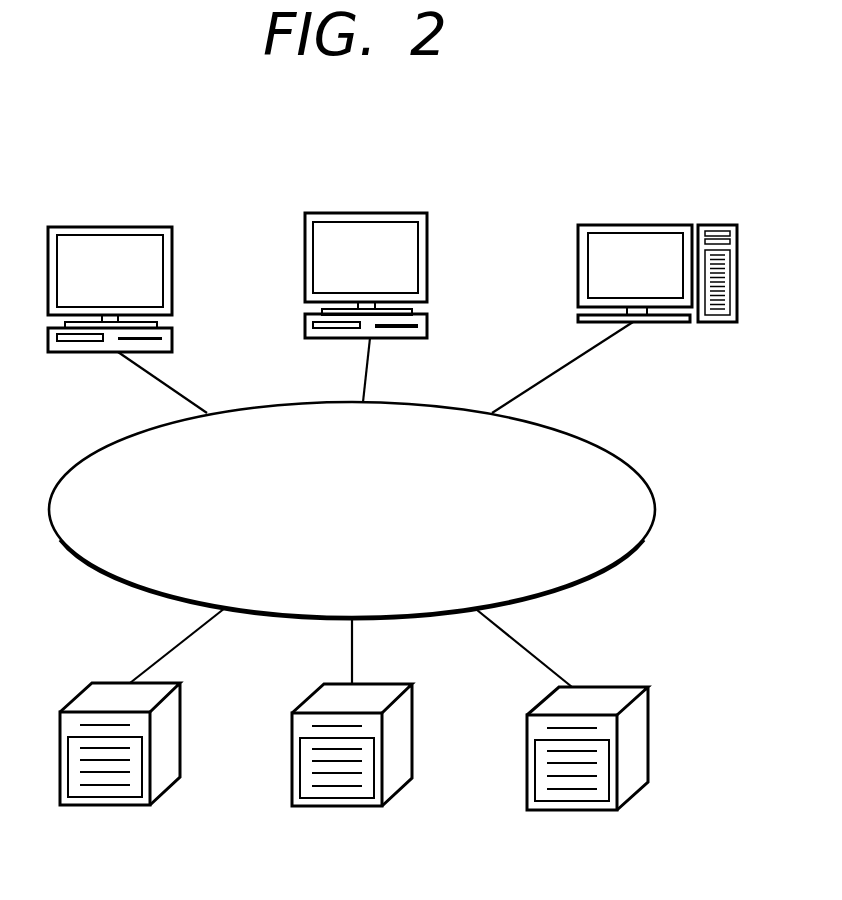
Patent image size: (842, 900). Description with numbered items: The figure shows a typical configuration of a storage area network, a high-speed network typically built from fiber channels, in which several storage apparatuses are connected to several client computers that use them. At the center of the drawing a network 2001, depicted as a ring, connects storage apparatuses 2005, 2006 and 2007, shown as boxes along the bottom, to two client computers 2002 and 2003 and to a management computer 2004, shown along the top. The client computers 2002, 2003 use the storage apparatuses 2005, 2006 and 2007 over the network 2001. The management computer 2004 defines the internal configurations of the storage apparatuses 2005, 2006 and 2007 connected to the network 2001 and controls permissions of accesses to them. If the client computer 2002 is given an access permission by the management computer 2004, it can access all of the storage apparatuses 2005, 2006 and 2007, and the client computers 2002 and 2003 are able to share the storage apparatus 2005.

The network 2001 is at (610, 452).
The client computer 2002 is at (147, 207).
The client computer 2003 is at (400, 195).
The management computer 2004 is at (677, 205).
The storage apparatus 2005 is at (92, 805).
The storage apparatus 2006 is at (324, 806).
The storage apparatus 2007 is at (559, 810).